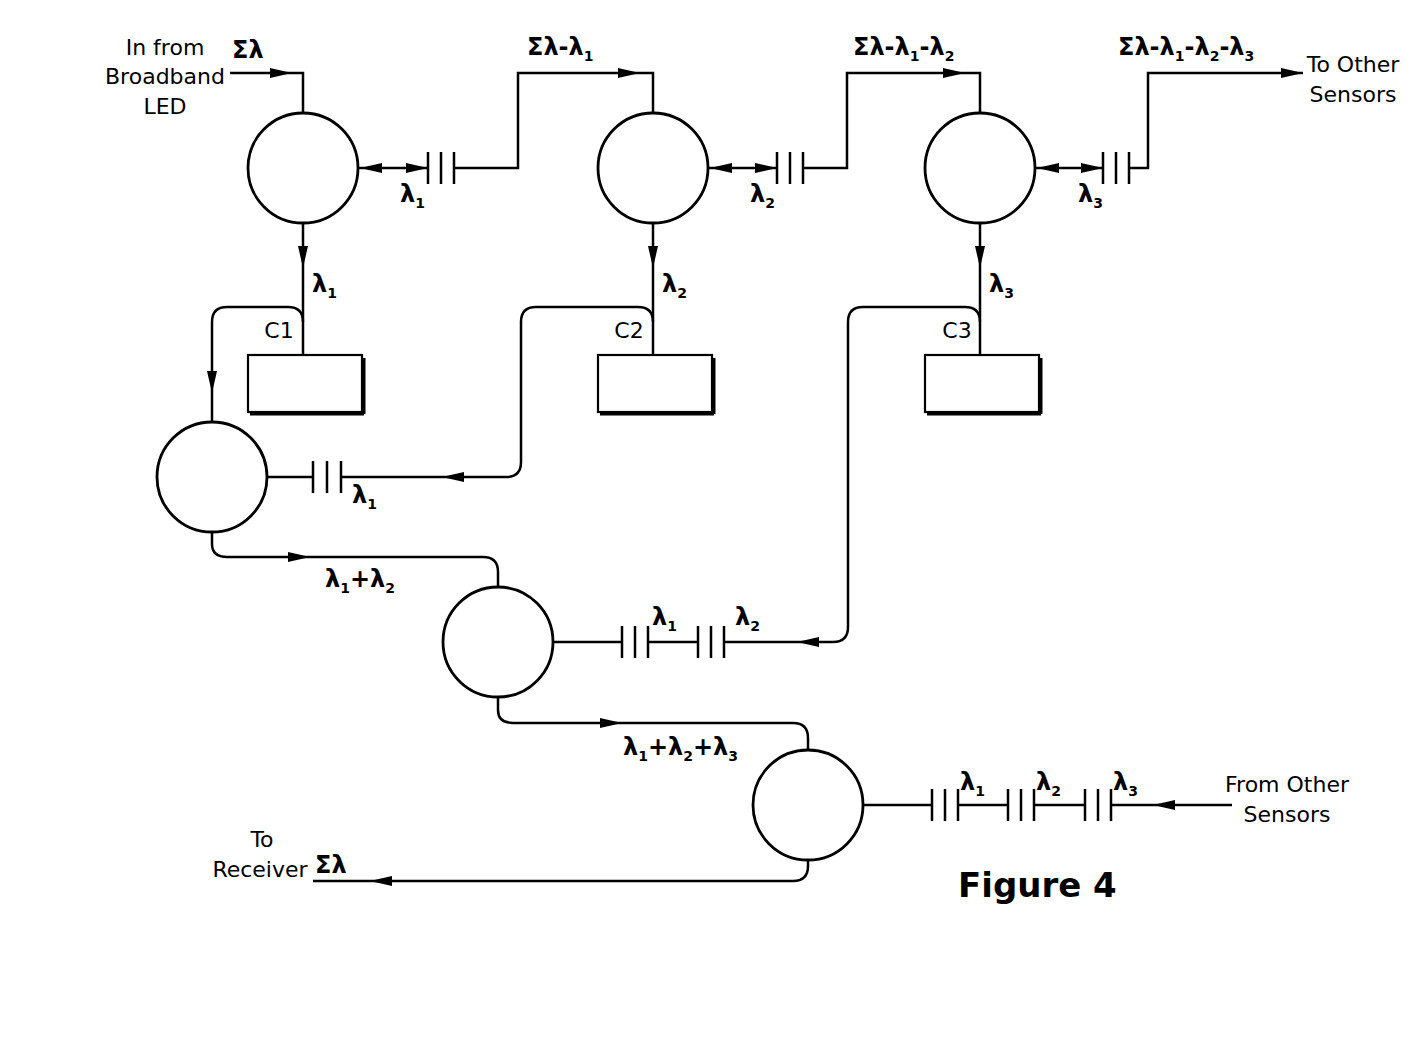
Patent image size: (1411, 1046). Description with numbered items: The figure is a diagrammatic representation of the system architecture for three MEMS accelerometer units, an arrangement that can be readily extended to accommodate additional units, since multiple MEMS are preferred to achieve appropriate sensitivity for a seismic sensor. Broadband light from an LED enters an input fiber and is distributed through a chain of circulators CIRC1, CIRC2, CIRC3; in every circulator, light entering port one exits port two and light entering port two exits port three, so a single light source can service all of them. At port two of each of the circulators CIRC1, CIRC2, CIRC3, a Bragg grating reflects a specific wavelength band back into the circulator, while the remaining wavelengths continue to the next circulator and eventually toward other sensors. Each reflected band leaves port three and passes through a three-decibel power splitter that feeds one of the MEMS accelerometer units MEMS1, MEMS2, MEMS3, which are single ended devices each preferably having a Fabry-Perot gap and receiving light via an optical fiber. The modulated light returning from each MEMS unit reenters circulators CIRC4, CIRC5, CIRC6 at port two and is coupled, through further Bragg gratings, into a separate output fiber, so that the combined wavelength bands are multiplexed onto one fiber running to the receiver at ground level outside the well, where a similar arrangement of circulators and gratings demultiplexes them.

The circulator CIRC1 is at (303, 168).
The circulator CIRC2 is at (653, 168).
The circulator CIRC3 is at (980, 168).
The circulator CIRC4 is at (212, 477).
The circulator CIRC5 is at (498, 642).
The circulator CIRC6 is at (808, 805).
The MEMS accelerometer unit MEMS1 is at (306, 384).
The MEMS accelerometer unit MEMS2 is at (656, 384).
The MEMS accelerometer unit MEMS3 is at (983, 384).